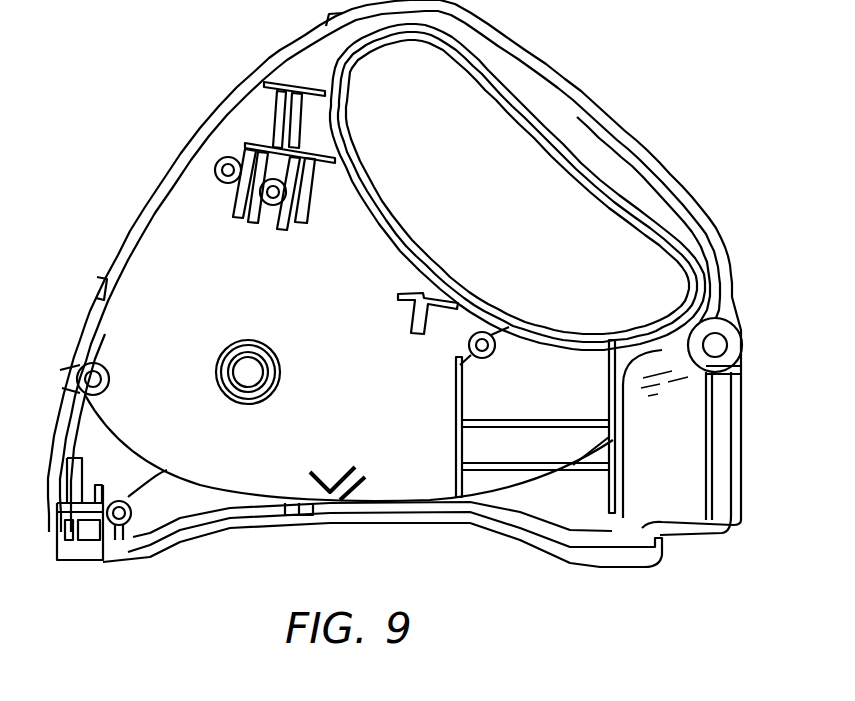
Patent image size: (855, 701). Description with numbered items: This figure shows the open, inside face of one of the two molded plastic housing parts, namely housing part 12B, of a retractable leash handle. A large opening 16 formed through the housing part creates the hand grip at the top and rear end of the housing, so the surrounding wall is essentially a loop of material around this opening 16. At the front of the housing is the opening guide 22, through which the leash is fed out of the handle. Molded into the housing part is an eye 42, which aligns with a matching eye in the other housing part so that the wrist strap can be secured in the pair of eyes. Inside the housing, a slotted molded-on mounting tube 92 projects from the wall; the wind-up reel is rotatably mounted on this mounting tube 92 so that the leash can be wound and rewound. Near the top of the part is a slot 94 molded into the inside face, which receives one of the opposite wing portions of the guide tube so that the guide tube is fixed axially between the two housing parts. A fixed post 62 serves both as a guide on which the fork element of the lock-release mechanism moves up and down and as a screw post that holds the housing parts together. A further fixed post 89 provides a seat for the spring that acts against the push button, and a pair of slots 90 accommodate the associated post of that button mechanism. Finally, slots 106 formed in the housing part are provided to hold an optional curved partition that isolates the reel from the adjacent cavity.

The housing part 12B is at (160, 175).
The opening guide 22 is at (100, 283).
The slot 94 is at (280, 132).
The fixed post 62 is at (276, 207).
The opening 16 is at (486, 213).
The eye 42 is at (718, 338).
The mounting tube 92 is at (230, 352).
The slots 106 is at (418, 332).
The fixed post 89 is at (128, 503).
The slots 90 is at (48, 538).